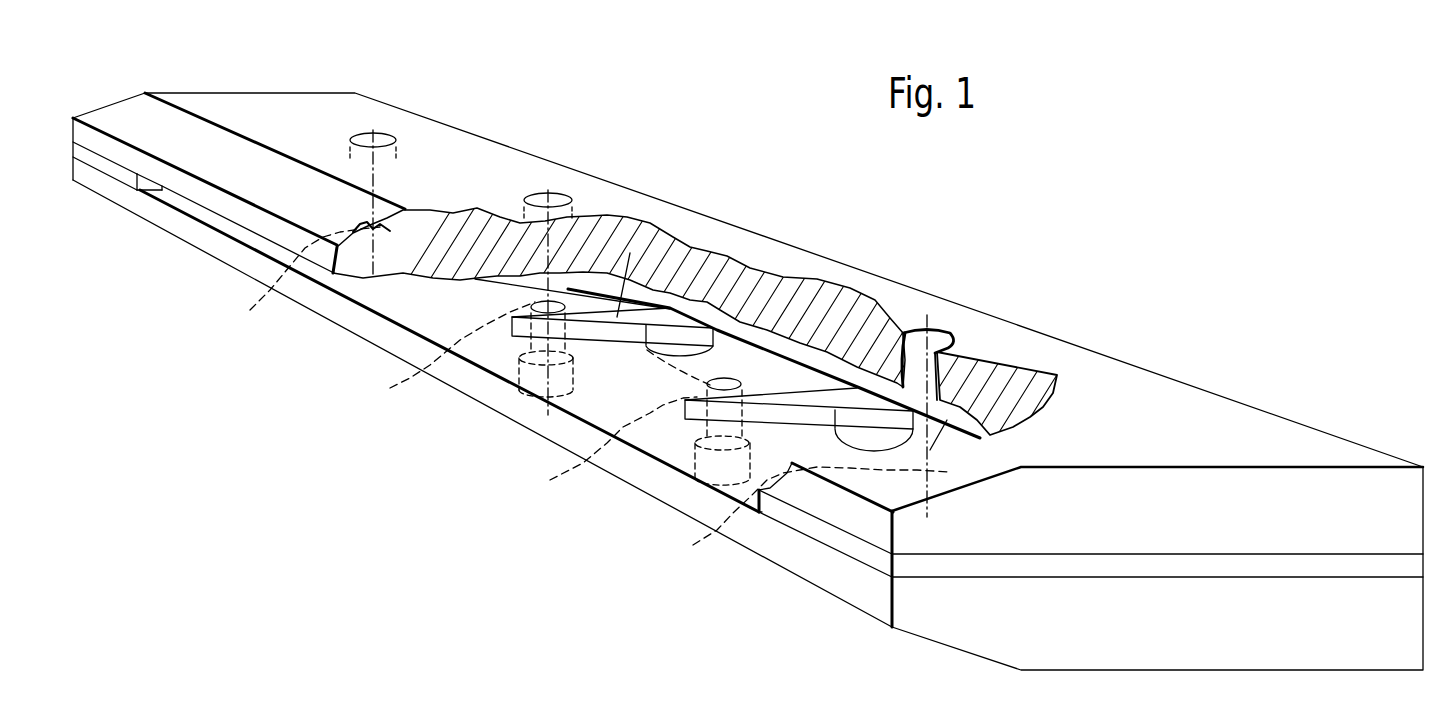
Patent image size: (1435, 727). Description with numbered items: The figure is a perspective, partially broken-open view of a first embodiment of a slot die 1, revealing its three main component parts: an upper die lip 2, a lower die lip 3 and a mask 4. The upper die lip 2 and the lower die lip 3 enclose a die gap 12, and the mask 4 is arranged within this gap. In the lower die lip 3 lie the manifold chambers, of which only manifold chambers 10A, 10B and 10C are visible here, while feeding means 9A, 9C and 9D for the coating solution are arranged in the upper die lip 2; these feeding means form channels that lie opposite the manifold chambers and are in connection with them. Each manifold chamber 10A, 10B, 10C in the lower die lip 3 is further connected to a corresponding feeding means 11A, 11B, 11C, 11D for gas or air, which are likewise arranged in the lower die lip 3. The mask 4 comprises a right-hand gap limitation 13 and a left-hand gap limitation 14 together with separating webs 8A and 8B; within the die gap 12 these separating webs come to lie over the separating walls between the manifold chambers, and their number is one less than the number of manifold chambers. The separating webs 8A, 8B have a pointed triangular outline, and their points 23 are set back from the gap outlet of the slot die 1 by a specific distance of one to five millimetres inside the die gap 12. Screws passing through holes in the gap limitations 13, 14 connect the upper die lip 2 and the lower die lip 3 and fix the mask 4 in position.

The slot die 1 is at (290, 88).
The upper die lip 2 is at (198, 102).
The lower die lip 3 is at (740, 528).
The mask 4 is at (927, 574).
The separating web 8A is at (893, 312).
The separating web 8B is at (677, 247).
The feeding means for the coating solution 9A is at (947, 330).
The feeding means for the coating solution 9C is at (556, 193).
The feeding means for the coating solution 9D is at (385, 133).
The manifold chamber 10A is at (1018, 368).
The manifold chamber 10B is at (765, 377).
The manifold chamber 10C is at (573, 298).
The feeding means for gas or air 11A is at (802, 514).
The feeding means for gas or air 11B is at (603, 447).
The feeding means for gas or air 11C is at (440, 353).
The feeding means for gas or air 11D is at (292, 278).
The die gap 12 is at (293, 262).
The right-hand gap limitation 13 is at (773, 507).
The left-hand gap limitation 14 is at (150, 192).
The point of the separating web 23 is at (543, 308).